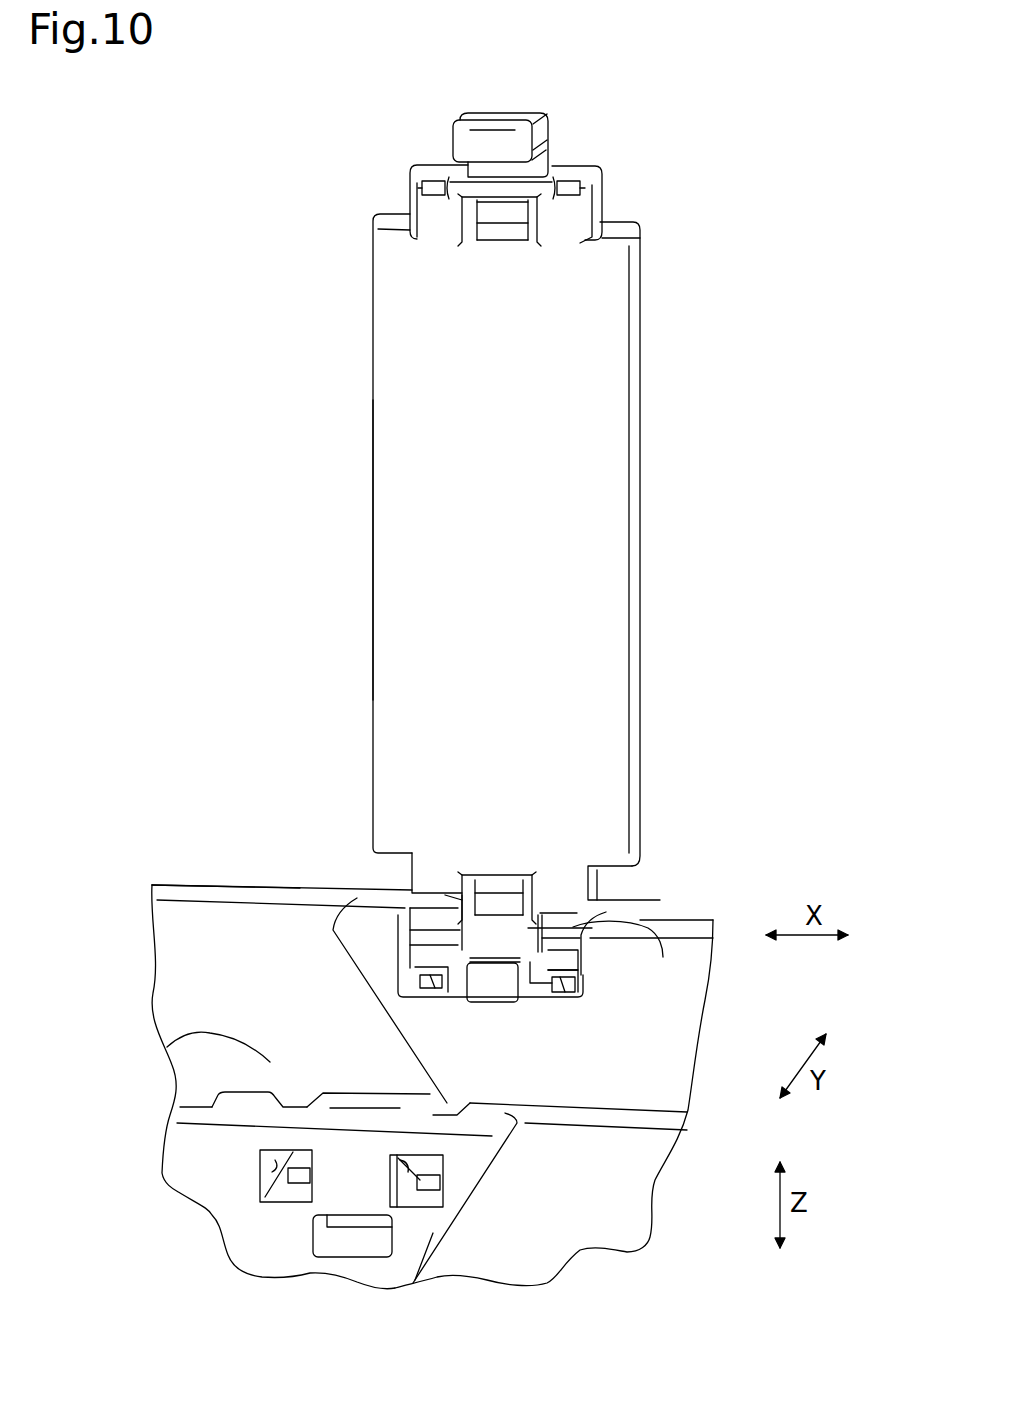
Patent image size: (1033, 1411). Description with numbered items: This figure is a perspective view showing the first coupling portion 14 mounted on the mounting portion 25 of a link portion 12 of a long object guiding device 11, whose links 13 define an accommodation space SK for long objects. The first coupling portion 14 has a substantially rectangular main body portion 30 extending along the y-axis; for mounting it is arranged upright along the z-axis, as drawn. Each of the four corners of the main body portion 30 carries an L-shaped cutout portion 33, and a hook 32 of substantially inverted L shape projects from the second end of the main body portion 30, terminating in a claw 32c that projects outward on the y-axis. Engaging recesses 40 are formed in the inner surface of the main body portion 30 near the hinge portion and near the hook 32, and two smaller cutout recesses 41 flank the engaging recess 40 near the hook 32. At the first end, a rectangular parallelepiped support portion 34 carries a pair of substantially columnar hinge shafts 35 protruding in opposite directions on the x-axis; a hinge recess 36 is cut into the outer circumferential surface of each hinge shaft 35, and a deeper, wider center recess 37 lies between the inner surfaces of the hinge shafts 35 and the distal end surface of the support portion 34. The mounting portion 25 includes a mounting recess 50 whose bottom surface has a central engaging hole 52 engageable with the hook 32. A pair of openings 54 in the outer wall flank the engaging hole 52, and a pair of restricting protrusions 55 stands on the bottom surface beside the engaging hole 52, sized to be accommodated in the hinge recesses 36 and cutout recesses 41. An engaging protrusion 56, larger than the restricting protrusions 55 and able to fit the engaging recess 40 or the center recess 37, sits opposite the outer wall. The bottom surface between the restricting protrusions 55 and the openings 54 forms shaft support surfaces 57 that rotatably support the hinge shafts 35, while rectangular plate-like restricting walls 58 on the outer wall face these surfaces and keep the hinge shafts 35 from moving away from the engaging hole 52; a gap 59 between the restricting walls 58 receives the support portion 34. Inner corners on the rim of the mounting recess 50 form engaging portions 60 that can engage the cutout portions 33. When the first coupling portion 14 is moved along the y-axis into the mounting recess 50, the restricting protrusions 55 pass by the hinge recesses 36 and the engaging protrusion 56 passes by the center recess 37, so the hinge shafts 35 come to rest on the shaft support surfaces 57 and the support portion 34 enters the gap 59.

The long object guiding device 11 is at (802, 238).
The link portion 12 is at (228, 882).
The link 13 is at (184, 878).
The first coupling portion 14 is at (642, 555).
The mounting portion 25 is at (604, 916).
The main body portion 30 is at (614, 721).
The hook 32 is at (518, 118).
The claw 32c is at (477, 126).
The cutout portion 33 is at (398, 218).
The support portion 34 is at (545, 915).
The hinge shaft 35 is at (410, 945).
The hinge recess 36 is at (410, 975).
The center recess 37 is at (533, 990).
The engaging recess 40 is at (507, 226).
The cutout recess 41 is at (432, 180).
The mounting recess 50 is at (458, 1003).
The engaging hole 52 is at (325, 1237).
The opening 54 is at (262, 1152).
The restricting protrusion 55 is at (420, 984).
The engaging protrusion 56 is at (490, 995).
The shaft support surface 57 is at (432, 992).
The restricting wall 58 is at (489, 1090).
The gap 59 is at (466, 900).
The engaging portion 60 is at (265, 1090).
The accommodation space SK is at (618, 1082).